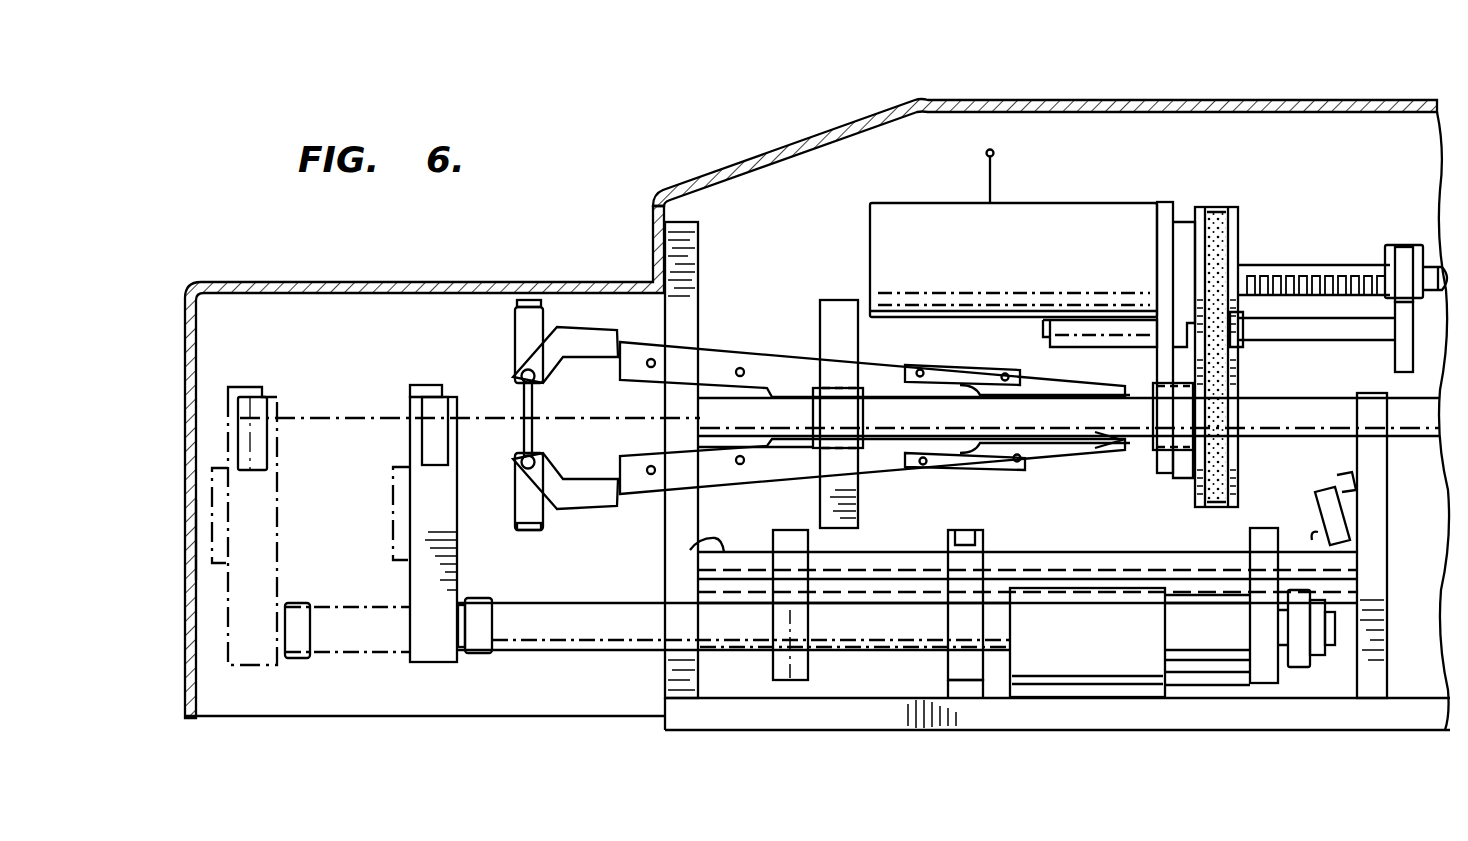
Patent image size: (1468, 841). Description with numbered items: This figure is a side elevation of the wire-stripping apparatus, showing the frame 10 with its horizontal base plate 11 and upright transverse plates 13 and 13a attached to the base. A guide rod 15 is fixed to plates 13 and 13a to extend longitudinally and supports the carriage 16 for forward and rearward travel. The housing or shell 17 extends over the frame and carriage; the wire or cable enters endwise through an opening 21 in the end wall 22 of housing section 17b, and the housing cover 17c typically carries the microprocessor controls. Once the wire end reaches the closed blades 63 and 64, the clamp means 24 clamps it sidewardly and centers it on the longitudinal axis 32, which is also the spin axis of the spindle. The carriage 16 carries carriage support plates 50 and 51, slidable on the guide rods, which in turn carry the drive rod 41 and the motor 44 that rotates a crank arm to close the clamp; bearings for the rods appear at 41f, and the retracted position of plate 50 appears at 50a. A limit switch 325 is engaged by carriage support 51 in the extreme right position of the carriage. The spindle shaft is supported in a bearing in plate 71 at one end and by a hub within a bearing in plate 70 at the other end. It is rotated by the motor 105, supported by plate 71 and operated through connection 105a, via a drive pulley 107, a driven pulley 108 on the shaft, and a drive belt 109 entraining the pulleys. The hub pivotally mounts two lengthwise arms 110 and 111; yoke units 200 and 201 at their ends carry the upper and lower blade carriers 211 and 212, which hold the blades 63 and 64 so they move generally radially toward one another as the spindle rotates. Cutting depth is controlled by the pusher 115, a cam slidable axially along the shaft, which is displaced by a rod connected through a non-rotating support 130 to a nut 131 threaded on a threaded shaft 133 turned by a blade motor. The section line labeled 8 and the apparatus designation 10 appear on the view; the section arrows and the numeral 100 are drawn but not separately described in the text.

The section line 8- 8 is at (370, 315).
The frame 10 is at (463, 262).
The horizontal base plate 11 is at (830, 722).
The upright transverse plate 13 is at (665, 678).
The upright transverse plate 13a is at (1380, 690).
The guide rod 15 is at (700, 538).
The carriage 16 is at (972, 685).
The housing or shell 17 is at (817, 389).
The housing section 17b is at (243, 282).
The housing cover 17c is at (892, 103).
The opening 21 is at (190, 400).
The end wall 22 is at (190, 540).
The clamp means 24 is at (232, 608).
The longitudinal axis 32 is at (313, 425).
The drive rod 41 is at (767, 625).
The bearings 41f is at (1305, 598).
The motor or gear motor 44 is at (1130, 642).
The carriage support plate 50 is at (945, 660).
The retracted position of carriage support plate 50a is at (770, 660).
The carriage support plate 51 is at (1268, 670).
The blade or cutter 63 is at (520, 380).
The blade or cutter 64 is at (548, 432).
The plate 70 is at (825, 300).
The plate 71 is at (1165, 202).
The gripper assembly 100 is at (965, 478).
The motor 105 is at (1013, 275).
The connection 105a is at (985, 153).
The drive pulley 107 is at (1240, 218).
The driven pulley 108 is at (1195, 488).
The drive belt 109 is at (1220, 385).
The arm 110 is at (738, 345).
The arm 111 is at (742, 480).
The pusher 115 is at (1105, 442).
The support 130 is at (1400, 352).
The nut 131 is at (1390, 245).
The threaded shaft 133 is at (1305, 265).
The yoke unit 200 is at (590, 330).
The yoke unit 201 is at (575, 500).
The upper blade carrier 211 is at (540, 300).
The lower blade carrier 212 is at (520, 492).
The limit switch 325 is at (1345, 505).